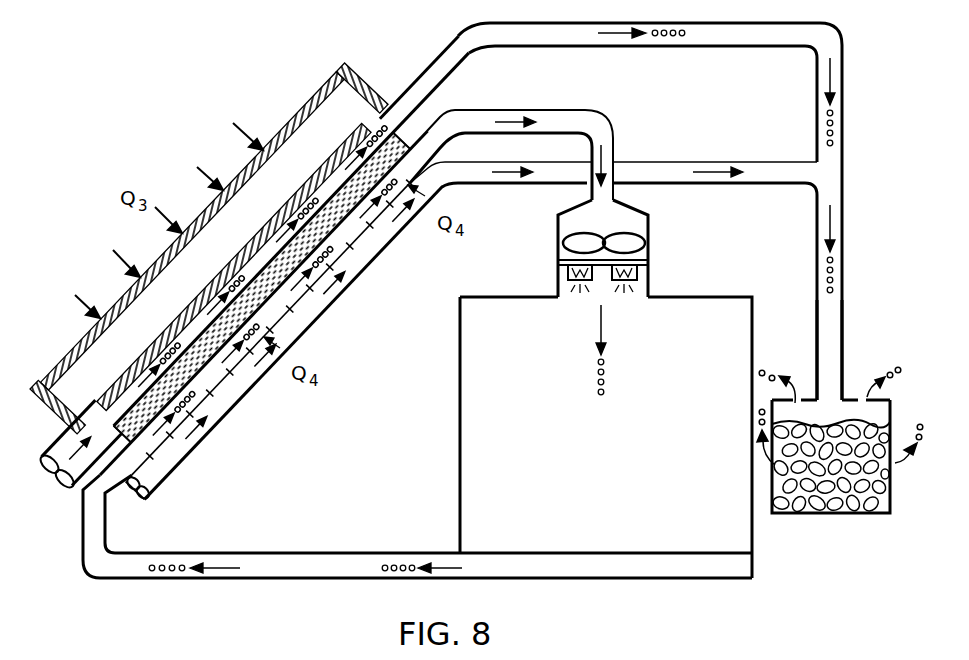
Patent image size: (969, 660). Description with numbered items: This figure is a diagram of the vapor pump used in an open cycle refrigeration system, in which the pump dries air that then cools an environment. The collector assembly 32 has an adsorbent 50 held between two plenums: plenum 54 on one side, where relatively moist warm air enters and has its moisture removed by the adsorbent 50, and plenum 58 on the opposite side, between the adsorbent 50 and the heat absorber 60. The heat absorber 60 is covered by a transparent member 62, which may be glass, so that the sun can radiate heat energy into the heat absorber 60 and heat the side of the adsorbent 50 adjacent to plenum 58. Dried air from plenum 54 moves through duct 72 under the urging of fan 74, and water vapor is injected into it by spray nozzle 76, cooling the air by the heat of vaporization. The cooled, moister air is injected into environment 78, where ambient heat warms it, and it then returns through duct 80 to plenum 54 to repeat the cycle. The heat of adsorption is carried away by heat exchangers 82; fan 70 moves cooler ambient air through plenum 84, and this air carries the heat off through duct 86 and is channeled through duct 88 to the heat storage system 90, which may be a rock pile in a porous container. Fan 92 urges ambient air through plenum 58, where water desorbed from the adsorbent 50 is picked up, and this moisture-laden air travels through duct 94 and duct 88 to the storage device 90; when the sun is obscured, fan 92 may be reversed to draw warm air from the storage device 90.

The solar collector 32 is at (176, 131).
The adsorbent 50 is at (432, 119).
The plenum 54 is at (223, 357).
The plenum 58 is at (74, 443).
The heat absorber 60 is at (341, 152).
The transparent member 62 is at (319, 104).
The fan 70 is at (137, 495).
The duct 72 is at (557, 110).
The fan 74 is at (641, 236).
The spray nozzle 76 is at (640, 272).
The environment 78 is at (503, 298).
The duct 80 is at (333, 553).
The heat exchangers 82 is at (306, 285).
The plenum 84 is at (173, 452).
The duct 86 is at (722, 162).
The duct 88 is at (817, 266).
The heat storage system 90 is at (857, 513).
The fan 92 is at (47, 477).
The duct 94 is at (706, 47).